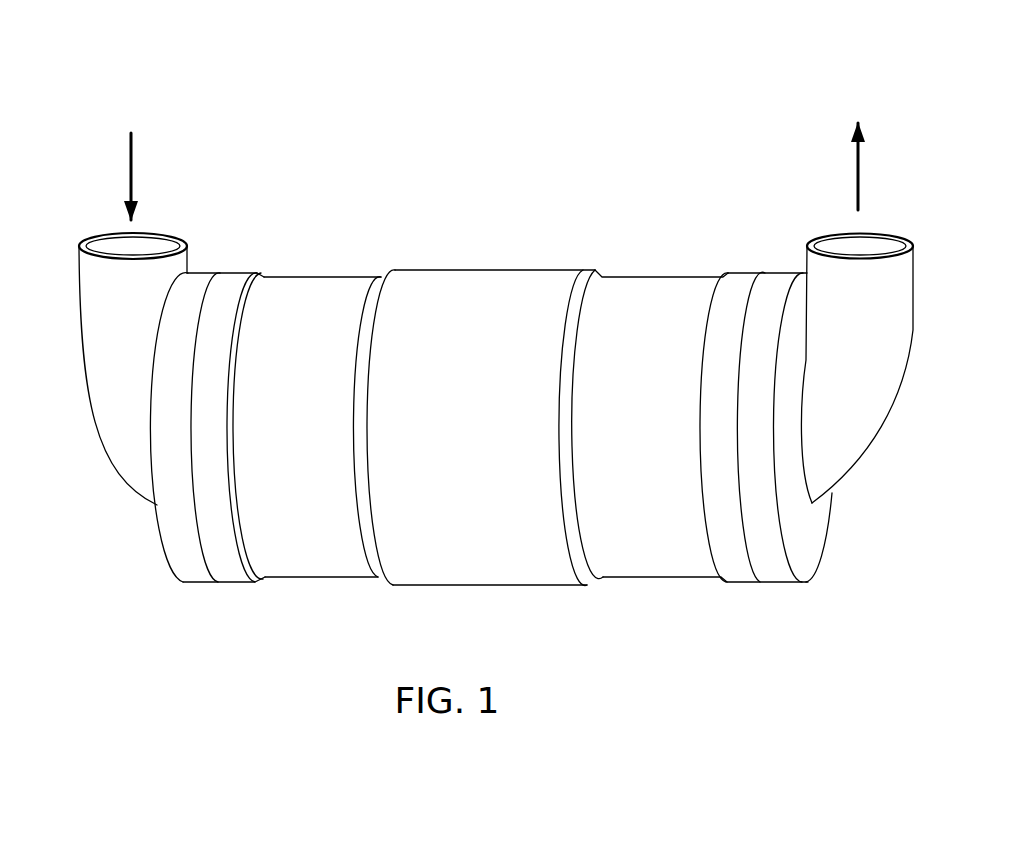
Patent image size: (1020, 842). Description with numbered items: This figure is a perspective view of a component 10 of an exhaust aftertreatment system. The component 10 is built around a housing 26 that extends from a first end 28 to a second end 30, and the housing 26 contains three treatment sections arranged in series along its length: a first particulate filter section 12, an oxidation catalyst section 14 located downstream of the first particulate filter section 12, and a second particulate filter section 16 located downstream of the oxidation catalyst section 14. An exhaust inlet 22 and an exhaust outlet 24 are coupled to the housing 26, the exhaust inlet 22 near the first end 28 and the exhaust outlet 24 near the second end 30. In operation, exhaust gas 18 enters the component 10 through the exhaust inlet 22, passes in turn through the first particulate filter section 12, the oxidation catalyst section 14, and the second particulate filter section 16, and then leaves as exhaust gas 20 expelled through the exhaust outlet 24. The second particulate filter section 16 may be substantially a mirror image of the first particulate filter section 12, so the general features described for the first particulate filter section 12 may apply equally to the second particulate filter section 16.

The component 10 is at (293, 72).
The first particulate filter section 12 is at (260, 263).
The oxidation catalyst section 14 is at (475, 263).
The second particulate filter section 16 is at (744, 265).
The exhaust gas 18 is at (131, 160).
The exhaust gas 20 is at (858, 172).
The exhaust inlet 22 is at (85, 335).
The exhaust outlet 24 is at (890, 368).
The housing 26 is at (348, 272).
The first end 28 is at (160, 532).
The second end 30 is at (812, 536).